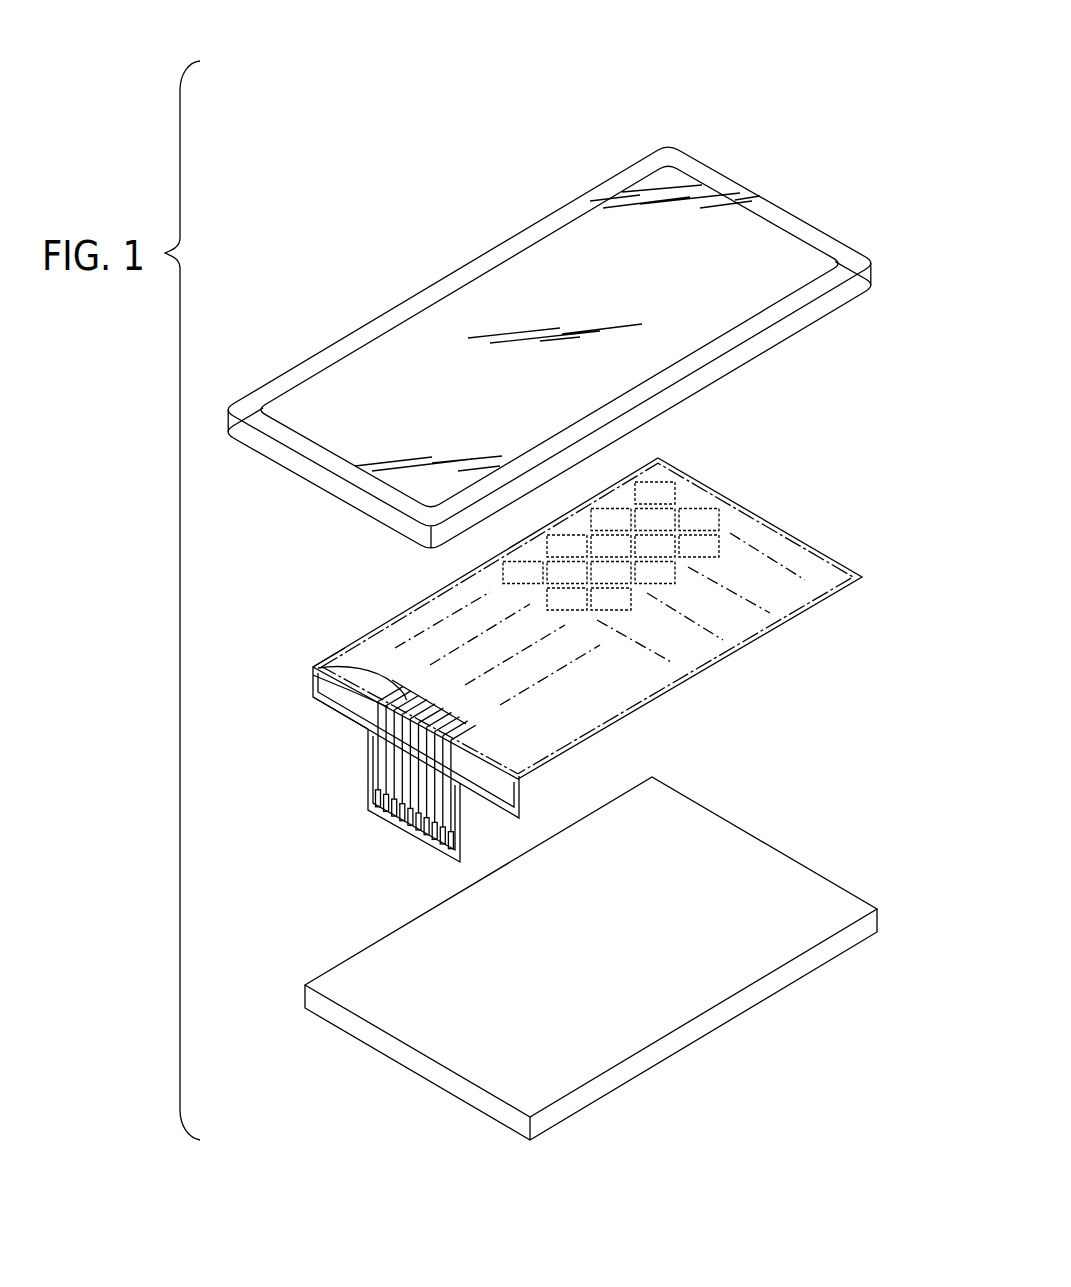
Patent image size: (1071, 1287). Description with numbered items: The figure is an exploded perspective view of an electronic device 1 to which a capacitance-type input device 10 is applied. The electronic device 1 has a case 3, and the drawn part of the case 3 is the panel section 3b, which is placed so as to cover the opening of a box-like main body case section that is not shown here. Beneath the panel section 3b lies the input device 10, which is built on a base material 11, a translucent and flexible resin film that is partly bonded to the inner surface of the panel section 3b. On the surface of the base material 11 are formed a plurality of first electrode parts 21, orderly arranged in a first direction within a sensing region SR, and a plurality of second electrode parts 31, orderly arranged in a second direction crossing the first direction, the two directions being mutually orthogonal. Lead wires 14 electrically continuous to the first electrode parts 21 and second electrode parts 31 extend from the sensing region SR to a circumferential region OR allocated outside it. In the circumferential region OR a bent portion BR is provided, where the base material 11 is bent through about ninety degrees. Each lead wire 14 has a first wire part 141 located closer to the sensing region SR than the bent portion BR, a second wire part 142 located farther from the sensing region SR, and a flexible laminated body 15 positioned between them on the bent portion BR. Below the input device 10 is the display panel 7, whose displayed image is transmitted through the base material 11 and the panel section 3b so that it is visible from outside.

The electronic device 1 is at (750, 126).
The case 3 is at (549, 338).
The panel section 3b is at (568, 250).
The display panel 7 is at (765, 862).
The input device 10 is at (561, 644).
The base material 11 is at (736, 632).
The lead wires 14 is at (374, 725).
The flexible laminated body 15 is at (320, 668).
The first electrode parts 21 is at (705, 516).
The second electrode parts 31 is at (662, 515).
The first wire part 141 is at (368, 672).
The second wire part 142 is at (385, 767).
The bent portion BR is at (310, 660).
The circumferential region OR is at (336, 714).
The sensing region SR is at (805, 608).